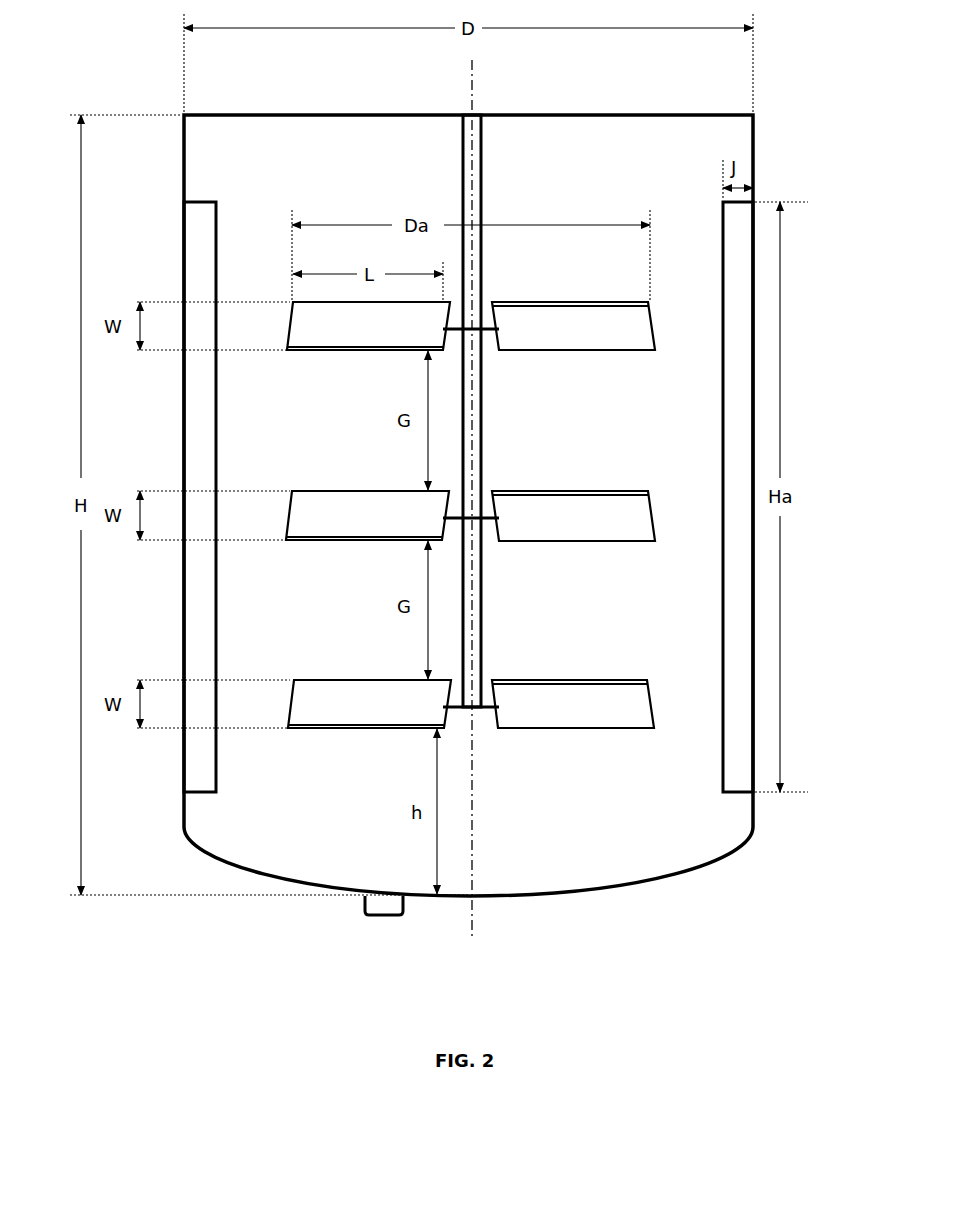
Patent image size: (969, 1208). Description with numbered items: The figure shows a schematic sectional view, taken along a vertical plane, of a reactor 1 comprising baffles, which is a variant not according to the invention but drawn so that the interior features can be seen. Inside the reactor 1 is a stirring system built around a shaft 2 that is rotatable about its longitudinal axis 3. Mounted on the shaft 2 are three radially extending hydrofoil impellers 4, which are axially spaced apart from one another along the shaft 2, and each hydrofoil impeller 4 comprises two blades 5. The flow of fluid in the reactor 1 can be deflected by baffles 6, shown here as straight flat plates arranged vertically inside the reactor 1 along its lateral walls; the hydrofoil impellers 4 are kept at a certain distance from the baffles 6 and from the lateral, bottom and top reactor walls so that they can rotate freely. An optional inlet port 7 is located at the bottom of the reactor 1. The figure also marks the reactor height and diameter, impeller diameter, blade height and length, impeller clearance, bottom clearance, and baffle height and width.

The reactor 1 is at (755, 150).
The shaft 2 is at (483, 168).
The longitudinal axis 3 is at (472, 100).
The hydrofoil impeller 4 is at (494, 516).
The blade 5 is at (616, 513).
The baffle 6 is at (738, 297).
The inlet port 7 is at (362, 905).